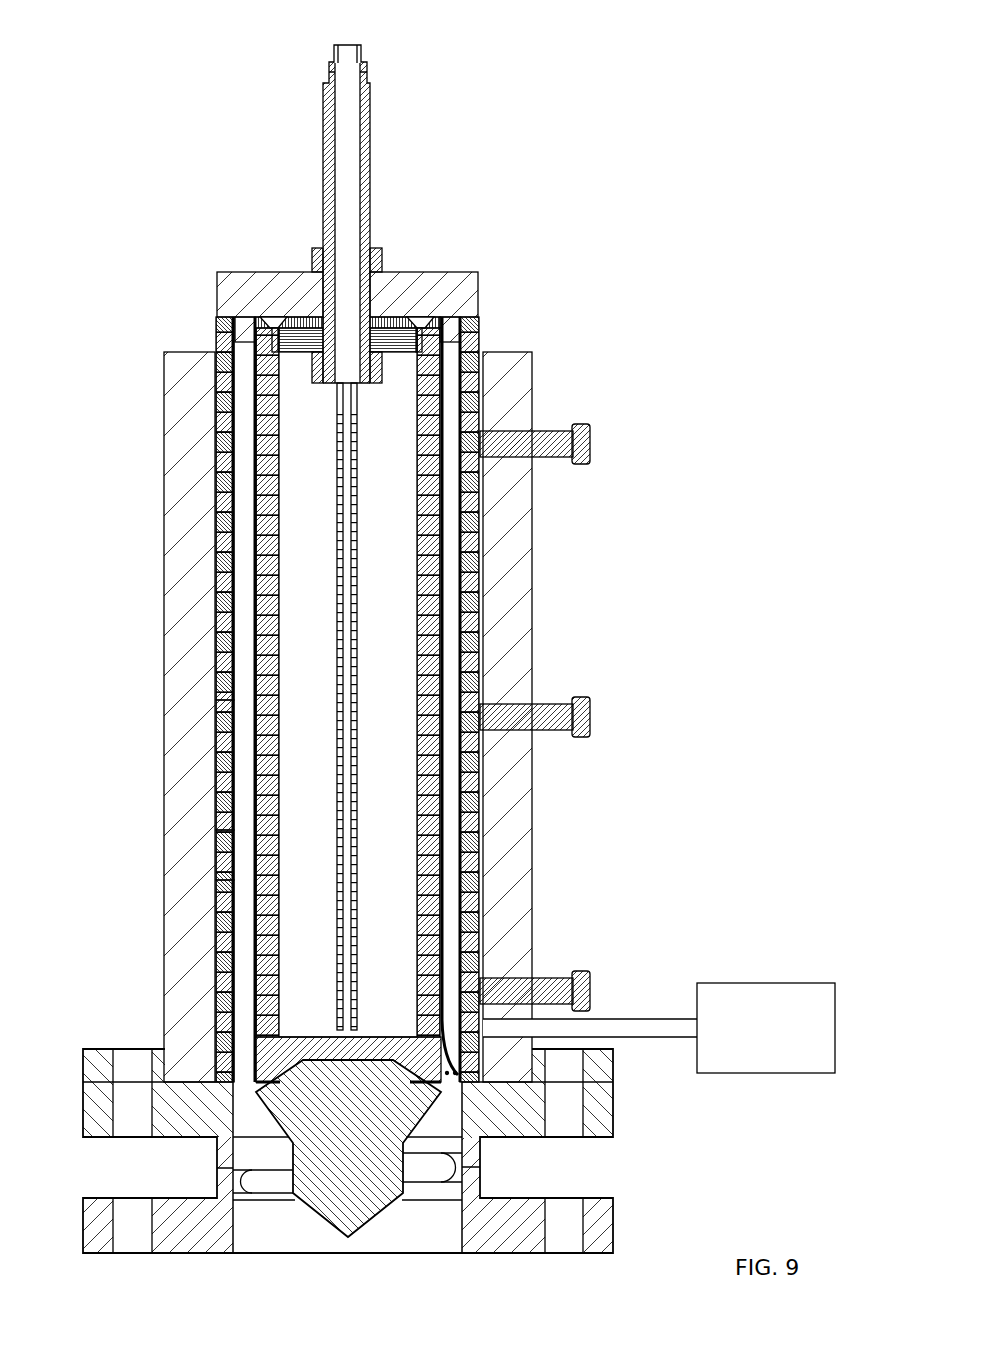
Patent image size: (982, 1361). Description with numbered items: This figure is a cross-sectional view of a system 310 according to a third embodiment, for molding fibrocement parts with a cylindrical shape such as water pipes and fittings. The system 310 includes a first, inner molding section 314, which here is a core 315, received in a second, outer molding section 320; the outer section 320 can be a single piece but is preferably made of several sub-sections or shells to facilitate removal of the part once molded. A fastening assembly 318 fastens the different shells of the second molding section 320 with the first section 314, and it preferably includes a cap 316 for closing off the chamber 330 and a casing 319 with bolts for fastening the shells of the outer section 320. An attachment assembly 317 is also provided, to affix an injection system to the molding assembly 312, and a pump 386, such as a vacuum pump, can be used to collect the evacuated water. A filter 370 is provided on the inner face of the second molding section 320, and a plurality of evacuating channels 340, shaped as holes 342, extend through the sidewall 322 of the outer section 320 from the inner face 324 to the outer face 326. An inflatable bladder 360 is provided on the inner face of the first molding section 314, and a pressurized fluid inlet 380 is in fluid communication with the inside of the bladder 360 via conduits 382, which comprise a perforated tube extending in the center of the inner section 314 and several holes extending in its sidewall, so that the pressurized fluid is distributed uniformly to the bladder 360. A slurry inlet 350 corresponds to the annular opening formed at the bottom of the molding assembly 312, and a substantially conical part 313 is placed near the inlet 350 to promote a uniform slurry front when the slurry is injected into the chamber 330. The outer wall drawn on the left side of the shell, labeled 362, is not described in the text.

The system 310 is at (456, 665).
The molding assembly 312 is at (270, 1053).
The substantially conical part 313 is at (400, 1108).
The first, inner molding section 314 is at (266, 348).
The core 315 is at (268, 367).
The cap 316 is at (446, 283).
The attachment assembly 317 is at (613, 1223).
The fastening assembly 318 is at (513, 290).
The casing 319 is at (515, 792).
The second, outer molding section 320 is at (213, 403).
The sidewall 322 is at (220, 462).
The inner face 324 is at (240, 712).
The outer face 326 is at (213, 756).
The chamber 330 is at (450, 567).
The evacuating channel 340 is at (220, 857).
The holes 342 is at (215, 882).
The slurry inlet 350 is at (417, 1220).
The inflatable bladder 360 is at (254, 556).
The left outer wall 362 is at (510, 405).
The filter 370 is at (455, 363).
The pressurized fluid inlet 380 is at (347, 52).
The conduits 382 is at (362, 831).
The pump 386 is at (790, 1043).